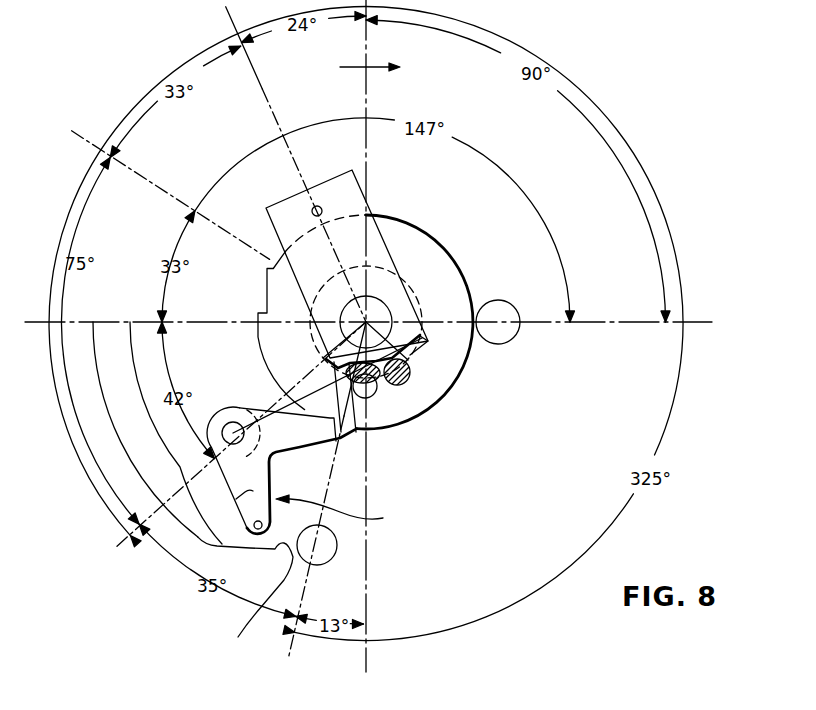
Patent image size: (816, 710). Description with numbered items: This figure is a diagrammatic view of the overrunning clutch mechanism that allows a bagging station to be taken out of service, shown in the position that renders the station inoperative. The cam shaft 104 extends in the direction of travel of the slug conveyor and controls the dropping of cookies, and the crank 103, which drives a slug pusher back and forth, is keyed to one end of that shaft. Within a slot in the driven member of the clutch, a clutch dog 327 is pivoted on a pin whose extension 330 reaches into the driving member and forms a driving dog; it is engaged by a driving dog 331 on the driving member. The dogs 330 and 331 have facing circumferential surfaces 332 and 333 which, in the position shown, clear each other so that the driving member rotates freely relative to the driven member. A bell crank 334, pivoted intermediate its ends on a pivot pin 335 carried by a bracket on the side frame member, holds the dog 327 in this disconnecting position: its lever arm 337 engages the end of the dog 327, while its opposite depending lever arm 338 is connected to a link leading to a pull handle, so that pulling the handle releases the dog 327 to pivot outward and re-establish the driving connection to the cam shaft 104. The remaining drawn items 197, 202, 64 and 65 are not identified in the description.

The crank 103 is at (348, 192).
The spring 197 is at (428, 221).
The disc 202 is at (266, 295).
The extension 330 is at (329, 366).
The circumferential surface 332 is at (355, 390).
The pivot pin 335 is at (234, 407).
The lever arm 337 is at (308, 452).
The bell crank 334 is at (348, 513).
The pin 65 is at (337, 546).
The cam track 64 is at (245, 603).
The depending lever arm 338 is at (236, 499).
The clutch dog 327 is at (354, 436).
The driving dog 331 is at (410, 362).
The circumferential surface 333 is at (420, 362).
The cam shaft 104 is at (428, 346).